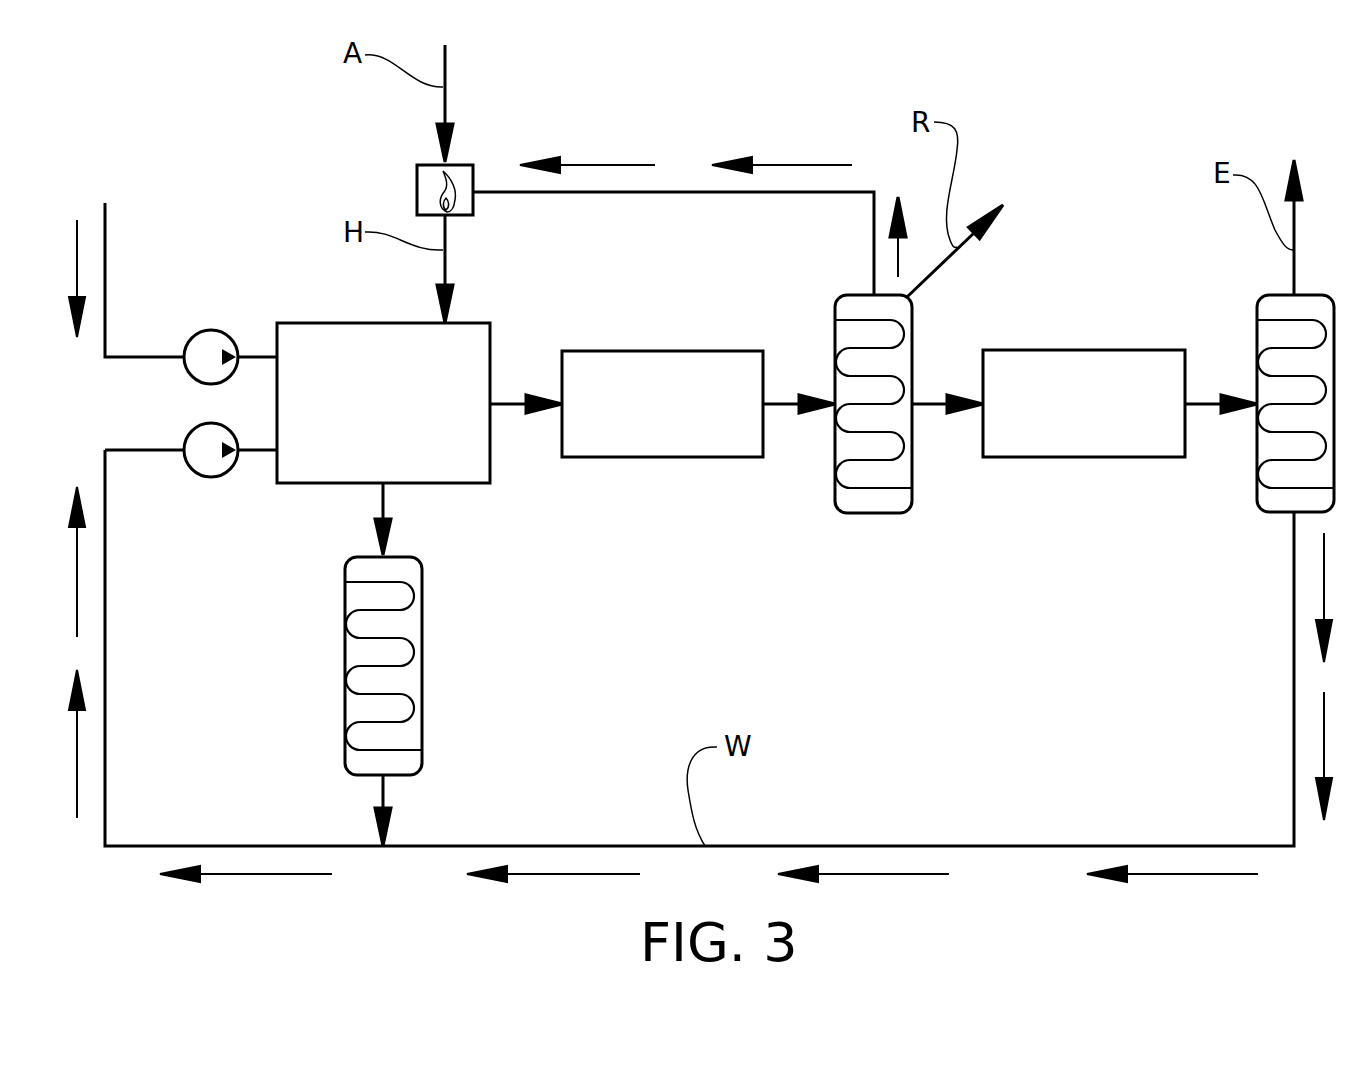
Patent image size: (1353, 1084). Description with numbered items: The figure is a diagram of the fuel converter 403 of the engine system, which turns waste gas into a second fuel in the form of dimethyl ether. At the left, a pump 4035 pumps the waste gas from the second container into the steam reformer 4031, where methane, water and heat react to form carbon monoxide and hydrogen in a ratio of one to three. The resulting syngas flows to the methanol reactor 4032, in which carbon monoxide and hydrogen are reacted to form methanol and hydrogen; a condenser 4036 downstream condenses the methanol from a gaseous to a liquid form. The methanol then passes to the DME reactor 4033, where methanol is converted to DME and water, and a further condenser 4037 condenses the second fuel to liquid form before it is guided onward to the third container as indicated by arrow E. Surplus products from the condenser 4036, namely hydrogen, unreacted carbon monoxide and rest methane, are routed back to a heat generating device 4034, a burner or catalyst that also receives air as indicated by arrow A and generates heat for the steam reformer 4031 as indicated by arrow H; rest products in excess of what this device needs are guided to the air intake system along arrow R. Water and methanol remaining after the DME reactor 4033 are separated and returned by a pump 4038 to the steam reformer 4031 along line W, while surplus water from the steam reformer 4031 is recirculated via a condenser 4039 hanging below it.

The fuel converter 403 is at (1063, 123).
The steam reformer 4031 is at (470, 483).
The methanol reactor 4032 is at (667, 457).
The DME reactor 4033 is at (1092, 457).
The heat generating device 4034 is at (415, 192).
The pump 4035 is at (211, 330).
The condenser 4036 is at (882, 513).
The further condenser 4037 is at (1255, 340).
The pump 4038 is at (211, 477).
The condenser 4039 is at (422, 668).